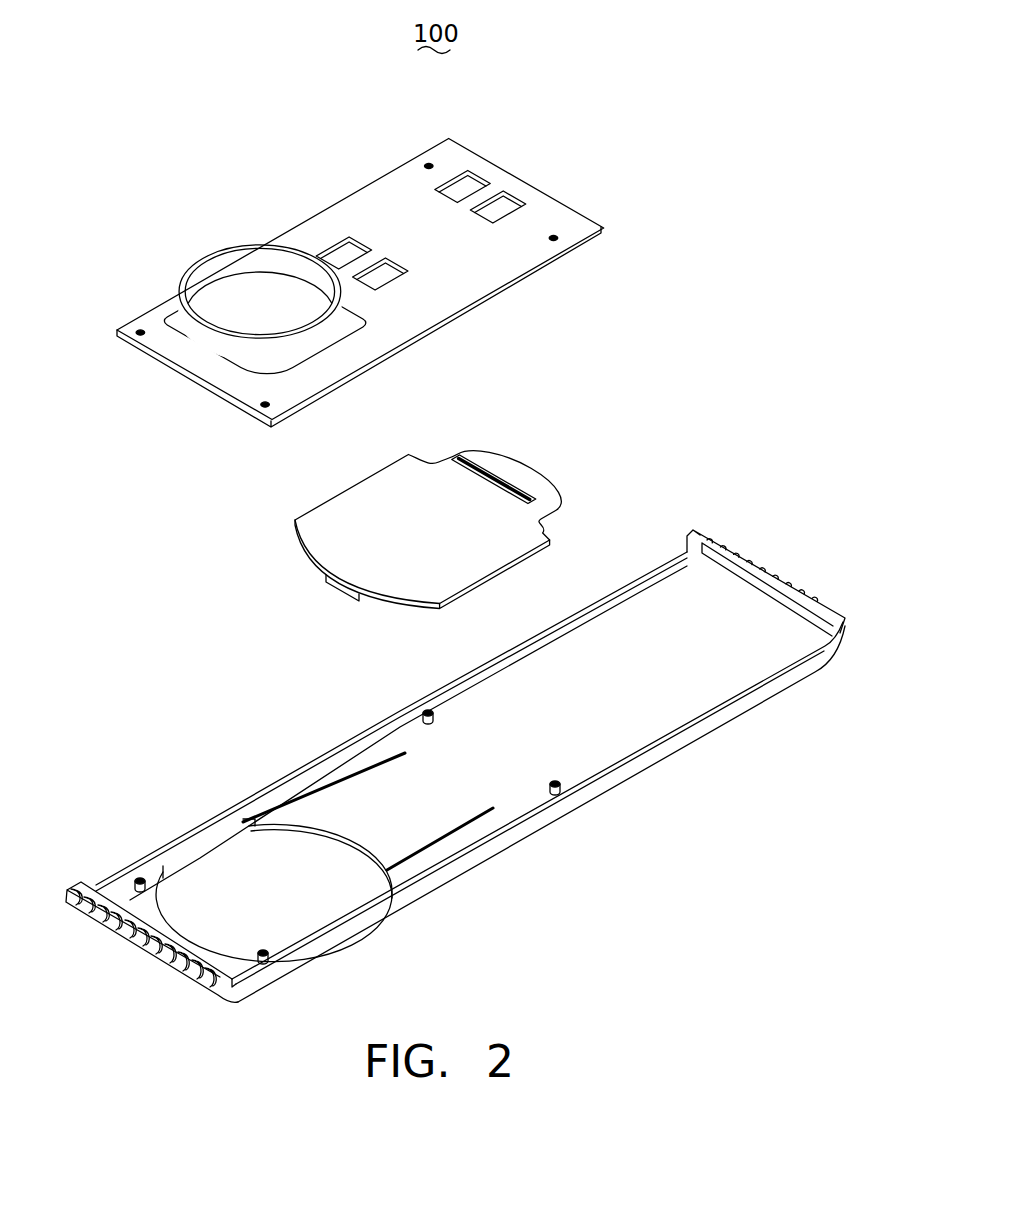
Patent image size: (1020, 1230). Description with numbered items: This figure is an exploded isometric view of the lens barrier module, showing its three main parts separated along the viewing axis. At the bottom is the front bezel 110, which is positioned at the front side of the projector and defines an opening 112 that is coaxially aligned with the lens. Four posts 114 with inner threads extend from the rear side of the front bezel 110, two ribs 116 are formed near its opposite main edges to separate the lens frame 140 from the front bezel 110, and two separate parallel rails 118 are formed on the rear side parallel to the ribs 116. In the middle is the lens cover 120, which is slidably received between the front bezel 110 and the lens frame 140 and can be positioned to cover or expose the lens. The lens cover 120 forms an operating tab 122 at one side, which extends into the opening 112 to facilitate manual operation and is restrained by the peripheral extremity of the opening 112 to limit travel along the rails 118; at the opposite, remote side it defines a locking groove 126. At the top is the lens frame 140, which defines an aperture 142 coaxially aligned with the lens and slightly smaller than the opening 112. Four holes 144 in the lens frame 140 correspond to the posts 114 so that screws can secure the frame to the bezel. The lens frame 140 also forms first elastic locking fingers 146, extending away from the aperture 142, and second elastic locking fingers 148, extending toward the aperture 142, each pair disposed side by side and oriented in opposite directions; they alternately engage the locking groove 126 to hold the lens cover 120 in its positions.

The front bezel 110 is at (757, 549).
The opening 112 is at (232, 868).
The posts 114 is at (134, 880).
The ribs 116 is at (455, 690).
The rails 118 is at (330, 800).
The lens cover 120 is at (567, 493).
The operating tab 122 is at (343, 590).
The locking groove 126 is at (497, 477).
The lens frame 140 is at (596, 209).
The aperture 142 is at (256, 300).
The holes 144 is at (141, 327).
The first elastic locking fingers 146 is at (470, 190).
The second elastic locking fingers 148 is at (340, 255).